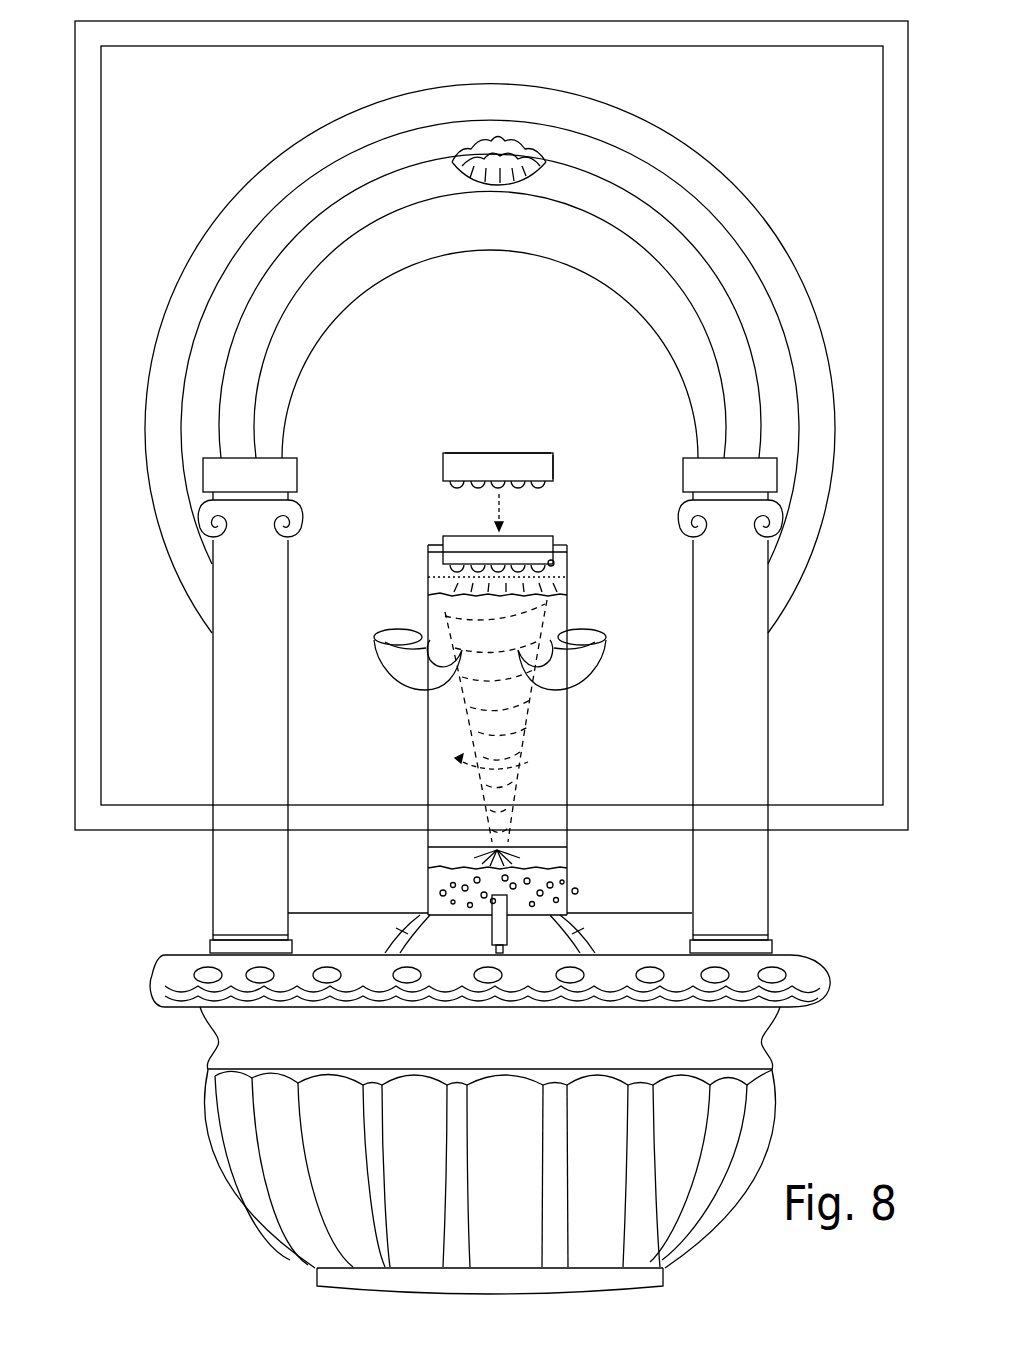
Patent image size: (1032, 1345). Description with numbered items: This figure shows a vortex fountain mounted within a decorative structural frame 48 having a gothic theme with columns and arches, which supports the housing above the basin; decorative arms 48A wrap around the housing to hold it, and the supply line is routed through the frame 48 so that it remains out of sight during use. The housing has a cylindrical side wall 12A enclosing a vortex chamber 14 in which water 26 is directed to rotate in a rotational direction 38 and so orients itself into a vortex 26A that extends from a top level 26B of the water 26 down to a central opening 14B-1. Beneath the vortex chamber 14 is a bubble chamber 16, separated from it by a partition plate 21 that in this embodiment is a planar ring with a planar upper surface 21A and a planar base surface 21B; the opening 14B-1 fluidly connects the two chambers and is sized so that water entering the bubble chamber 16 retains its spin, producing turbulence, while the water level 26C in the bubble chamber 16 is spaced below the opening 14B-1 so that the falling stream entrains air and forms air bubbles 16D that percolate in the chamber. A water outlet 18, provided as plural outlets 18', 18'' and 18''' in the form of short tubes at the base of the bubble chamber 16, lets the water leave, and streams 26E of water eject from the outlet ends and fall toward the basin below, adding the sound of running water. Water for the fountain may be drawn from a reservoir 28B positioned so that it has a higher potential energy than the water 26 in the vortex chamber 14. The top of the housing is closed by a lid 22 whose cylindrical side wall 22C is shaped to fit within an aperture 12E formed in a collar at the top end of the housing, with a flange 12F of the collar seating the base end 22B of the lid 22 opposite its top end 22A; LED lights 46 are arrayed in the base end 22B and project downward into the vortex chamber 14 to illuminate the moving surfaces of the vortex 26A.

The decorative structural frame 48 is at (773, 122).
The decorative arms 48A is at (387, 670).
The lid 22 is at (508, 453).
The top end of lid 22A is at (470, 453).
The base end of lid 22B is at (447, 481).
The cylindrical side wall of lid 22C is at (555, 462).
The aperture 12E is at (448, 557).
The flange 12F is at (556, 561).
The LED lights 46 is at (540, 574).
The top level of water 26B is at (448, 594).
The water 26 is at (438, 628).
The cylindrical side wall 12A is at (562, 627).
The vortex chamber 14 is at (562, 744).
The rotational direction 38 is at (530, 763).
The vortex 26A is at (532, 717).
The opening 14B-1 is at (494, 848).
The water level 26C is at (437, 868).
The bubble chamber 16 is at (562, 858).
The air bubbles 16D is at (453, 882).
The partition plate 21 is at (547, 847).
The upper surface 21A is at (530, 845).
The base surface 21B is at (562, 852).
The water outlet 18 is at (574, 891).
The water outlet 18' is at (582, 890).
The water outlet 18'' is at (528, 924).
The water outlet 18''' is at (417, 888).
The streams of water 26E is at (603, 938).
The reservoir 28B is at (732, 1034).